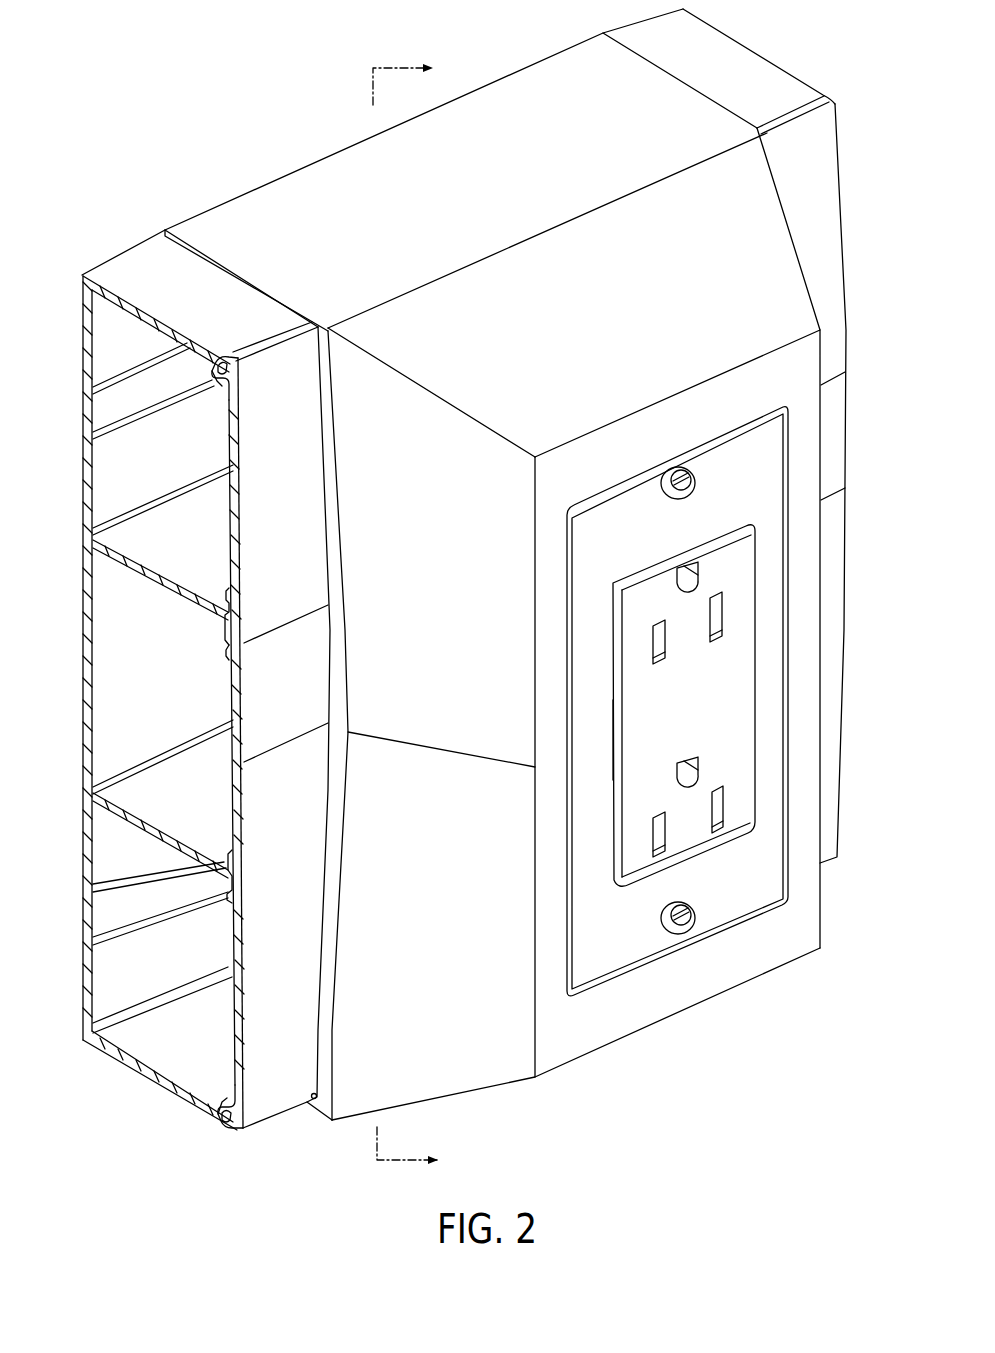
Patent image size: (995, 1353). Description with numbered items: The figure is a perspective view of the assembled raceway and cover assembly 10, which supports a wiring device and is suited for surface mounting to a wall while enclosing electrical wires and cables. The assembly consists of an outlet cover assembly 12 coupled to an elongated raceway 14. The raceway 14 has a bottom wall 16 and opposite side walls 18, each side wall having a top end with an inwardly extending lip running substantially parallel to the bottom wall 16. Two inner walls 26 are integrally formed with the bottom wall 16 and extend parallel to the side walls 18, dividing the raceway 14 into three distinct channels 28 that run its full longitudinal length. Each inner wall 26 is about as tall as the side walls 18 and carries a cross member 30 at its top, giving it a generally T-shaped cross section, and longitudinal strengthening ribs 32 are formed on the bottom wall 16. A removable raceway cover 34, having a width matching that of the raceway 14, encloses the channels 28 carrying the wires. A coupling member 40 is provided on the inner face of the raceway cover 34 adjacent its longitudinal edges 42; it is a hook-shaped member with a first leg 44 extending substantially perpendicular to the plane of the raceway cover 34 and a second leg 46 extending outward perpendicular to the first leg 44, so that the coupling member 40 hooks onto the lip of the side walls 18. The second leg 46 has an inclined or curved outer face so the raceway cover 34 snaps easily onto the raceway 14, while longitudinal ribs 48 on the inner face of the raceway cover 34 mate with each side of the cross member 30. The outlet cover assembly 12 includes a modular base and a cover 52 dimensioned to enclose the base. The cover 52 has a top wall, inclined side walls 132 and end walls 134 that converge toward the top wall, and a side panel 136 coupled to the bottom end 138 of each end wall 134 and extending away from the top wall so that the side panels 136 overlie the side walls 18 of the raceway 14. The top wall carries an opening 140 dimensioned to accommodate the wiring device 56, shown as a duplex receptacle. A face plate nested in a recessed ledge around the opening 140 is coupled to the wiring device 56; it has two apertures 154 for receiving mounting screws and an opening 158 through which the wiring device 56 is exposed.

The raceway and cover assembly 10 is at (223, 170).
The outlet cover assembly 12 is at (658, 1042).
The raceway 14 is at (742, 39).
The bottom wall 16 is at (110, 630).
The side walls 18 is at (143, 1080).
The inner wall 26 is at (157, 570).
The channels 28 is at (112, 477).
The cross member 30 is at (223, 631).
The longitudinal strengthening ribs 32 is at (97, 443).
The raceway cover 34 is at (262, 1105).
The coupling member 40 is at (214, 401).
The longitudinal edges 42 is at (276, 340).
The first leg 44 is at (218, 417).
The second leg 46 is at (213, 377).
The longitudinal ribs 48 is at (233, 651).
The cover 52 is at (773, 222).
The wiring device 56 is at (722, 685).
The side walls 132 is at (464, 1088).
The end walls 134 is at (768, 173).
The side panel 136 is at (527, 74).
The bottom end 138 is at (517, 245).
The opening 140 is at (723, 933).
The apertures 154 is at (695, 486).
The opening 158 is at (613, 762).